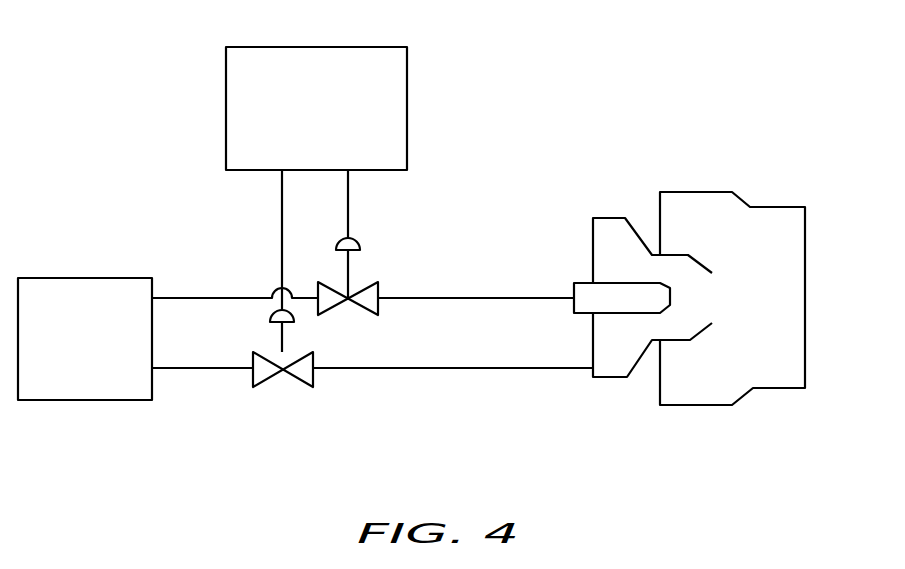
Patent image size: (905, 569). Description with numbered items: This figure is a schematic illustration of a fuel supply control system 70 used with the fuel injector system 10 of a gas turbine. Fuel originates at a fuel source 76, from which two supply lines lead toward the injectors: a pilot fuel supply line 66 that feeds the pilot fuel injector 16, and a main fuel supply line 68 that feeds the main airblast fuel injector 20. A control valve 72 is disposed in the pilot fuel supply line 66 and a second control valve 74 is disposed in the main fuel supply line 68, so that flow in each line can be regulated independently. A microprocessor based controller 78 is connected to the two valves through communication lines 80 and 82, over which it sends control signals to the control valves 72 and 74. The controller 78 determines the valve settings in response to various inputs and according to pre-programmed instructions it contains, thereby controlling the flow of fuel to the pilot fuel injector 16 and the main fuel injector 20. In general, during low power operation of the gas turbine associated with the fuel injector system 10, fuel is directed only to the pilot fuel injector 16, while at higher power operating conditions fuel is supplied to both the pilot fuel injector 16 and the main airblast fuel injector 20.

The fuel injector system 10 is at (715, 192).
The pilot fuel injector 16 is at (580, 285).
The main fuel injector 20 is at (683, 328).
The pilot fuel supply line 66 is at (482, 297).
The main fuel supply line 68 is at (410, 369).
The fuel supply control system 70 is at (141, 116).
The control valve 72 is at (376, 291).
The control valve 74 is at (297, 383).
The fuel source 76 is at (71, 386).
The microprocessor based controller 78 is at (368, 56).
The communication line 80 is at (282, 213).
The communication line 82 is at (348, 205).